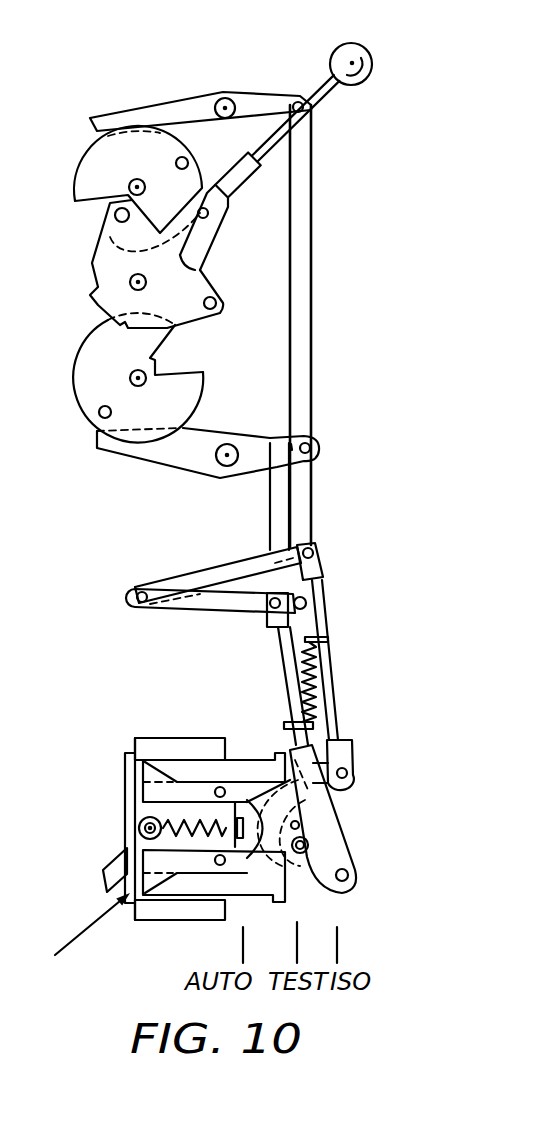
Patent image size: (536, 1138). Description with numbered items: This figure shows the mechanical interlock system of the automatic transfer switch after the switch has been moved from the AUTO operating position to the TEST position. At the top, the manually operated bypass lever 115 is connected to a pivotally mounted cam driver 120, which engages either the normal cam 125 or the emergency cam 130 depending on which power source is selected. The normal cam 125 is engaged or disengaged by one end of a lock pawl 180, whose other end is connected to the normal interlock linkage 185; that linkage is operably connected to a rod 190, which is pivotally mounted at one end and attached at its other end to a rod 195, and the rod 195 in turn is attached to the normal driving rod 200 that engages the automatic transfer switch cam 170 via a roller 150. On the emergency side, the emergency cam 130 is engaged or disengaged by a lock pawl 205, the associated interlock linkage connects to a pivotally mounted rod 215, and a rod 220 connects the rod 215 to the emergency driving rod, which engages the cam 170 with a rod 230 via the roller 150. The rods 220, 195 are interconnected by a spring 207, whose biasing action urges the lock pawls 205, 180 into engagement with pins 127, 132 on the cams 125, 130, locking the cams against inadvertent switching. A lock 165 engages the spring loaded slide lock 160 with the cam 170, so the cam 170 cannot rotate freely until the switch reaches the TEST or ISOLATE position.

The bypass lever 115 is at (358, 86).
The lock pawl 205 is at (193, 108).
The emergency cam 130 is at (97, 170).
The pin 132 is at (176, 159).
The cam driver 120 is at (200, 268).
The normal cam 125 is at (93, 362).
The pin 127 is at (100, 418).
The lock pawl 180 is at (183, 452).
The normal interlock linkage 185 is at (277, 500).
The rod 190 is at (235, 541).
The rod 215 is at (223, 600).
The rod 195 is at (323, 607).
The rod 220 is at (281, 672).
The spring 207 is at (308, 670).
The automatic transfer switch cam 170 is at (293, 808).
The roller 150 is at (305, 844).
The rod 230 is at (310, 878).
The normal driving rod 200 is at (245, 785).
The lock 165 is at (247, 853).
The slide lock 160 is at (108, 853).